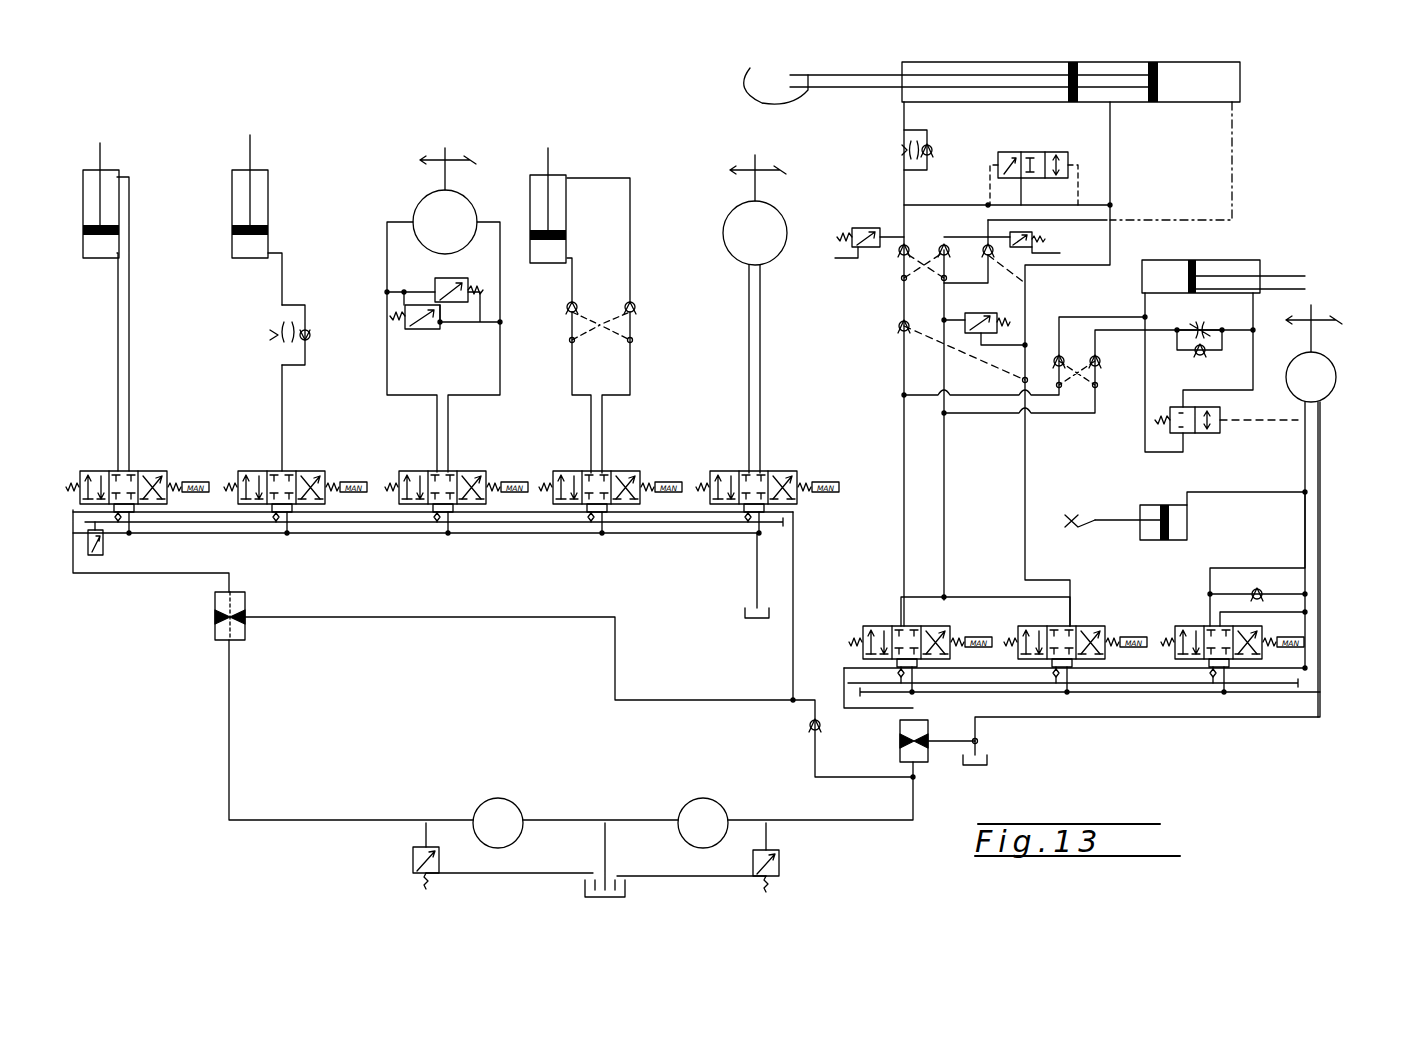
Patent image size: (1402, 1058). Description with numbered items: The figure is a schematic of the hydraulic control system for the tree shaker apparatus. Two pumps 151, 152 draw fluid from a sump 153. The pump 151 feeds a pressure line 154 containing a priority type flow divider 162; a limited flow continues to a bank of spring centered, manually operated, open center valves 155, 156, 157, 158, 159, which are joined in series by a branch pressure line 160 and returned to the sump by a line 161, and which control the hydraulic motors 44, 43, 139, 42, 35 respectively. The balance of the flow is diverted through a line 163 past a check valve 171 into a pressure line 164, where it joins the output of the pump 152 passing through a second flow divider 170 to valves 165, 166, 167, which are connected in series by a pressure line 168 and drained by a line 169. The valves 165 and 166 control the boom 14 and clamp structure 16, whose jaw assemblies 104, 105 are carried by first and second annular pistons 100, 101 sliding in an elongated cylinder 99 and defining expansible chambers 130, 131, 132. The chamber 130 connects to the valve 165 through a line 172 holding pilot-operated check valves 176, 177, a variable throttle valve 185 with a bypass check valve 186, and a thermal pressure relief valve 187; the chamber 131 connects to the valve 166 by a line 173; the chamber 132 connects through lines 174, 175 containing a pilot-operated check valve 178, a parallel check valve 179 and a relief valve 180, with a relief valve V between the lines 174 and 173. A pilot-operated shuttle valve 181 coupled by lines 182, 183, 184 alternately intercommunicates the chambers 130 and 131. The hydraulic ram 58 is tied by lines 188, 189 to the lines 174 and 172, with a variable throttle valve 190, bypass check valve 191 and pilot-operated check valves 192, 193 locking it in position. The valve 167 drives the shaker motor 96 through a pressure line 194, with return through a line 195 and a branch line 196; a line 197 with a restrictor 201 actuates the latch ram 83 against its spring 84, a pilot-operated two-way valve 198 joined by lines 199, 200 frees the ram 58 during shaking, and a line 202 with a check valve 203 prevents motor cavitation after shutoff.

The boom 14 is at (1253, 102).
The clamp structure 16 is at (747, 104).
The hydraulic motor 35 is at (793, 207).
The hydraulic motor 42 is at (630, 178).
The hydraulic motor 43 is at (309, 220).
The hydraulic motor 44 is at (156, 216).
The hydraulic ram 58 is at (1240, 254).
The ram 83 is at (1203, 528).
The spring 84 is at (1088, 513).
The shaker motor 96 is at (1343, 373).
The cylinder 99 is at (1240, 78).
The first annular piston 100 is at (1078, 104).
The second annular piston 101 is at (1158, 104).
The jaw assembly 104 is at (752, 70).
The jaw assembly 105 is at (788, 73).
The expansible chamber 130 is at (960, 62).
The expansible chamber 131 is at (1098, 62).
The expansible chamber 132 is at (1193, 62).
The hydraulic motor 139 is at (493, 207).
The pump 151 is at (518, 805).
The pump 152 is at (708, 800).
The sump 153 is at (628, 893).
The pressure line 154 is at (73, 510).
The flow control valve 155 is at (161, 462).
The flow control valve 156 is at (318, 462).
The flow control valve 157 is at (478, 462).
The flow control valve 158 is at (636, 462).
The flow control valve 159 is at (793, 462).
The pressure line 160 is at (185, 522).
The line 161 is at (385, 533).
The priority type flow divider 162 is at (215, 620).
The line 163 is at (552, 612).
The pressure line 164 is at (842, 668).
The flow control valve 165 is at (949, 620).
The flow control valve 166 is at (1099, 620).
The flow control valve 167 is at (1190, 622).
The pressure line 168 is at (1005, 672).
The line 169 is at (1003, 698).
The priority type flow divider 170 is at (900, 742).
The check valve 171 is at (808, 730).
The line 172 is at (903, 188).
The line 173 is at (1110, 182).
The line 174 is at (1235, 185).
The line 175 is at (1000, 597).
The pilot-operated check valve 176 is at (898, 327).
The pilot-operated check valve 177 is at (904, 260).
The pilot-operated check valve 178 is at (944, 245).
The pilot-operated check valve 179 is at (988, 245).
The pressure relief valve 180 is at (1035, 232).
The pilot-operated shuttle valve 181 is at (1030, 150).
The line 182 is at (1021, 205).
The line 183 is at (948, 112).
The line 184 is at (975, 205).
The throttle valve 185 is at (897, 156).
The check valve 186 is at (932, 154).
The pressure relief valve 187 is at (868, 228).
The line 188 is at (1070, 415).
The line 189 is at (998, 393).
The throttle valve 190 is at (1200, 322).
The check valve 191 is at (1196, 354).
The pilot-operated check valve 192 is at (1108, 360).
The pilot-operated check valve 193 is at (1055, 355).
The pressure line 194 is at (1295, 562).
The line 195 is at (1312, 450).
The branch line 196 is at (1258, 612).
The line 197 is at (1260, 490).
The pilot-operated two-way valve 198 is at (1222, 410).
The line 199 is at (1125, 370).
The line 200 is at (1253, 348).
The restrictor 201 is at (1233, 480).
The line 202 is at (1222, 592).
The check valve 203 is at (1262, 594).
The pressure relief valve V is at (973, 313).